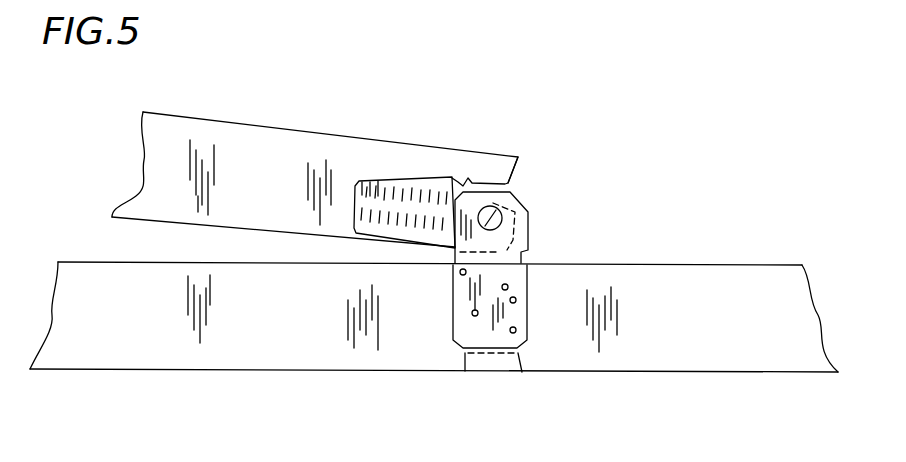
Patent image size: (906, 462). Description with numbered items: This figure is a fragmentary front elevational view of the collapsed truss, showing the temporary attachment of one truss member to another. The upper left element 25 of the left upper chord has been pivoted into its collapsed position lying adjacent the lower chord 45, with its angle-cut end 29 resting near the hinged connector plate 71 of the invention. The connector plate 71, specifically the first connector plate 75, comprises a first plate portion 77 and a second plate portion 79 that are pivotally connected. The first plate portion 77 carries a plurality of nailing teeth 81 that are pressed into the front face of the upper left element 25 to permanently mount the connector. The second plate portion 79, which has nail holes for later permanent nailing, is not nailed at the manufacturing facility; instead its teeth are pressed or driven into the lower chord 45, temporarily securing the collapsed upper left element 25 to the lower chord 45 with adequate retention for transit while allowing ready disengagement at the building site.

The upper left element 25 is at (263, 143).
The lower chord 45 is at (667, 362).
The first plate portion 77 is at (397, 176).
The nailing teeth 81 is at (363, 188).
The end of upper left element 29 is at (513, 167).
The connector plate 71 is at (536, 224).
The first connector plate 75 is at (519, 353).
The second plate portion 79 is at (463, 373).